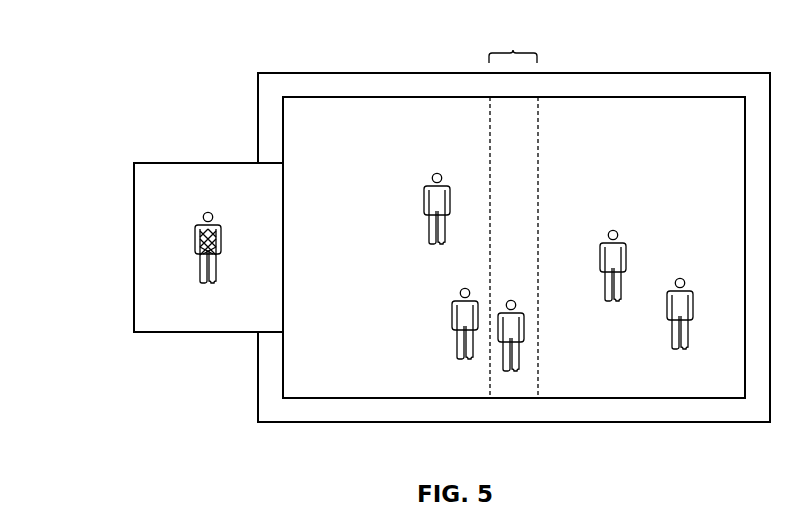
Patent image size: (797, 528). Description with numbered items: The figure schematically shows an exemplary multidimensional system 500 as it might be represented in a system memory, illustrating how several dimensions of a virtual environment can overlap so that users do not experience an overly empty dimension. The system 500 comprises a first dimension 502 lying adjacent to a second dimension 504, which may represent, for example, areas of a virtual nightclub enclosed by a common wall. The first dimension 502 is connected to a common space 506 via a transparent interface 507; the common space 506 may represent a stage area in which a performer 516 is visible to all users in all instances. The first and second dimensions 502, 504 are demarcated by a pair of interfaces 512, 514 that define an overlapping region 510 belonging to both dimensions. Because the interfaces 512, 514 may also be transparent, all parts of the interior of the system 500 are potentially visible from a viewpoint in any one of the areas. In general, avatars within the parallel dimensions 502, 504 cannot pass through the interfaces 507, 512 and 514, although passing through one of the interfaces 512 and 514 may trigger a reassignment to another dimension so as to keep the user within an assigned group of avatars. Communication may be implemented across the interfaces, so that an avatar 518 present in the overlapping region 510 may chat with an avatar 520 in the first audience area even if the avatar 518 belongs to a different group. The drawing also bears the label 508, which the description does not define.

The multidimensional system 500 is at (187, 60).
The first dimension 502 is at (380, 387).
The second dimension 504 is at (600, 387).
The common space 506 is at (145, 298).
The transparent interface 507 is at (283, 313).
The display frame 508 is at (372, 83).
The overlapping region 510 is at (513, 50).
The interface 512 is at (489, 146).
The interface 514 is at (539, 144).
The performer 516 is at (195, 244).
The avatar 518 is at (524, 327).
The avatar 520 is at (452, 316).